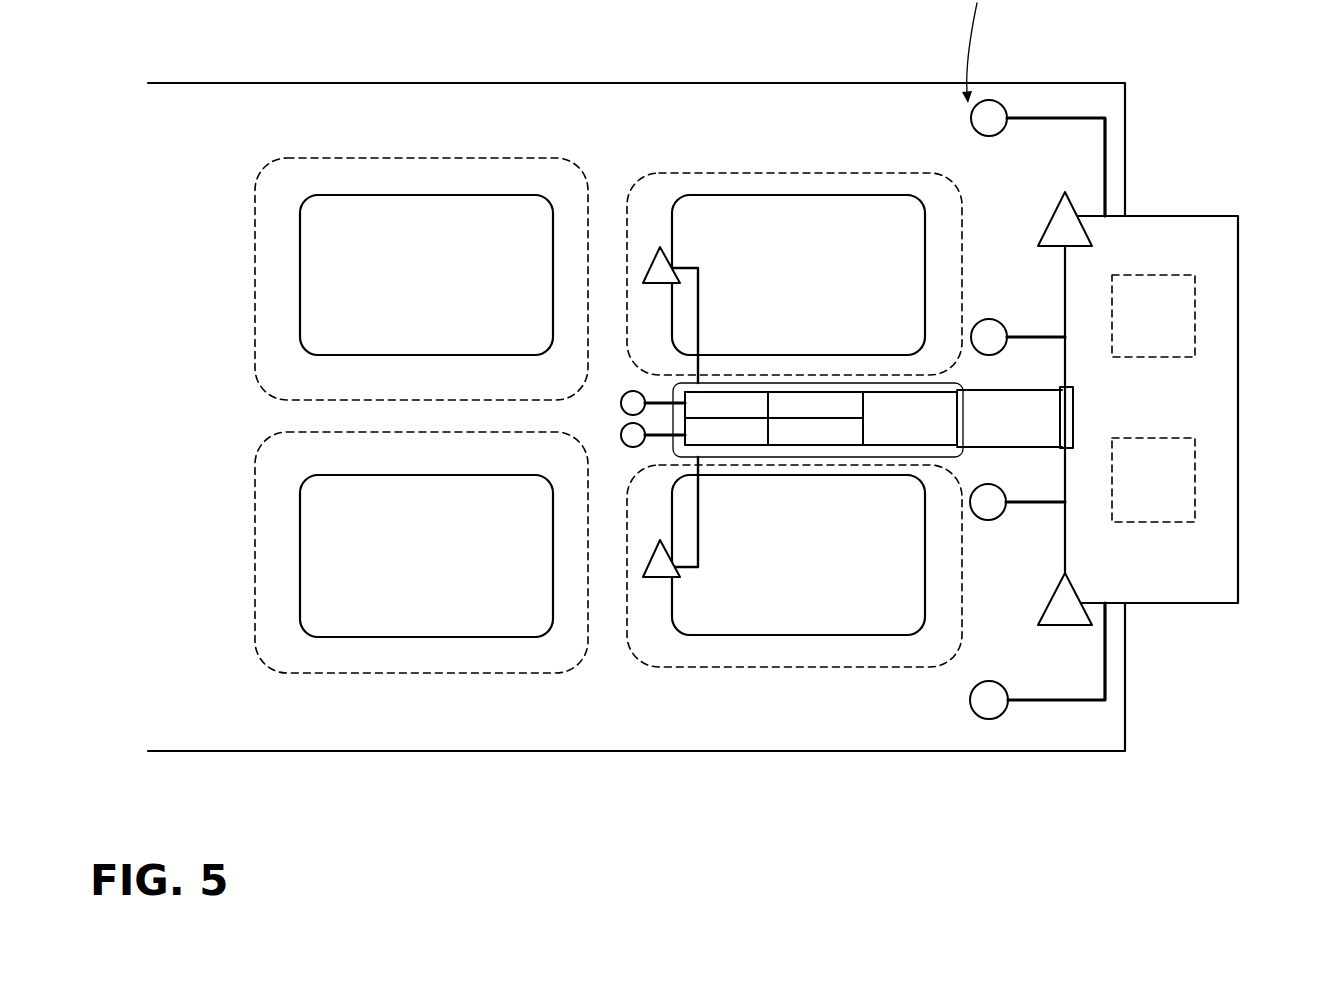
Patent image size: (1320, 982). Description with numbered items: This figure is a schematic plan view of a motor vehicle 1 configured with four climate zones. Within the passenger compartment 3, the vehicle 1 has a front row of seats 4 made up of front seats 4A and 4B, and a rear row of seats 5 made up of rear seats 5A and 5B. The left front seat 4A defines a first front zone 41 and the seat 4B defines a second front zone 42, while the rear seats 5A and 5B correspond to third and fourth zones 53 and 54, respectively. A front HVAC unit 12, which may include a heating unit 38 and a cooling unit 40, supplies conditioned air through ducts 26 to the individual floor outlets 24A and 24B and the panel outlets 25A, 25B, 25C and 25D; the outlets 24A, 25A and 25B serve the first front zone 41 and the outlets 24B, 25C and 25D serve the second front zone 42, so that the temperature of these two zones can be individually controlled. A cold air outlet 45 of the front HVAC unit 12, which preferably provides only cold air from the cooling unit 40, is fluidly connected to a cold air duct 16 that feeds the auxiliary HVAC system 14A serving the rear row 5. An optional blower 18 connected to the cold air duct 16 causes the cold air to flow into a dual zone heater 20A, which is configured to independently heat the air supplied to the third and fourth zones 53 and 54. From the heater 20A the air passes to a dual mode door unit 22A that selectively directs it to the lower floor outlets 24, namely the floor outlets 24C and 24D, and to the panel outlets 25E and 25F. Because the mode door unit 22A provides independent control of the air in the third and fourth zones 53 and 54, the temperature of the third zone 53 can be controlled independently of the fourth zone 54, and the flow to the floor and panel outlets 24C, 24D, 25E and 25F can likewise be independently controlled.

The motor vehicle 1 is at (483, 749).
The passenger compartment 3 is at (493, 133).
The front row of seats 4 is at (794, 425).
The front seat 4A is at (697, 195).
The front seat 4B is at (750, 636).
The rear row of seats 5 is at (367, 400).
The rear seat 5A is at (300, 262).
The rear seat 5B is at (300, 572).
The front HVAC unit 12 is at (1187, 369).
The HVAC system 14A is at (737, 403).
The cold air duct 16 is at (981, 432).
The blower 18 is at (900, 430).
The dual zone heater 20A is at (843, 407).
The dual mode door unit 22A is at (817, 383).
The floor outlets 24 is at (863, 423).
The floor outlet 24A is at (1048, 225).
The floor outlet 24B is at (1050, 603).
The floor outlet 24C is at (652, 262).
The floor outlet 24D is at (652, 572).
The panel outlet 25A is at (990, 107).
The panel outlet 25B is at (993, 320).
The panel outlet 25C is at (987, 513).
The panel outlet 25D is at (990, 718).
The panel outlet 25E is at (621, 400).
The panel outlet 25F is at (621, 440).
The ducts 26 is at (1070, 117).
The heating unit 38 is at (1185, 317).
The cooling unit 40 is at (1183, 476).
The first front zone 41 is at (753, 170).
The second front zone 42 is at (700, 673).
The cold air outlet 45 is at (1068, 430).
The third zone 53 is at (250, 333).
The fourth zone 54 is at (250, 617).